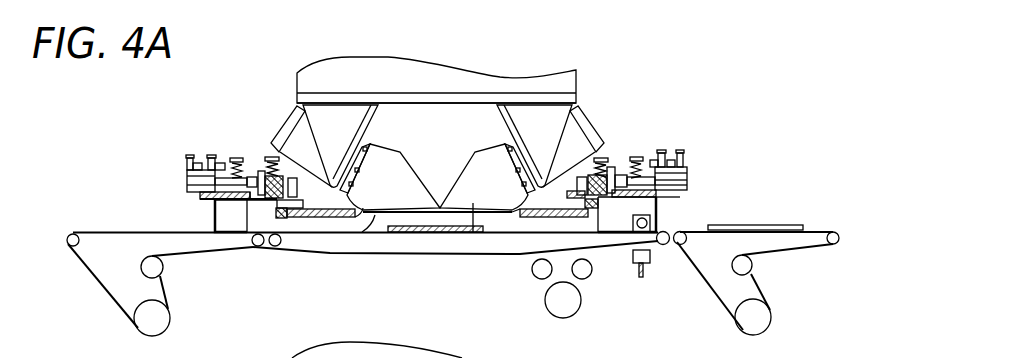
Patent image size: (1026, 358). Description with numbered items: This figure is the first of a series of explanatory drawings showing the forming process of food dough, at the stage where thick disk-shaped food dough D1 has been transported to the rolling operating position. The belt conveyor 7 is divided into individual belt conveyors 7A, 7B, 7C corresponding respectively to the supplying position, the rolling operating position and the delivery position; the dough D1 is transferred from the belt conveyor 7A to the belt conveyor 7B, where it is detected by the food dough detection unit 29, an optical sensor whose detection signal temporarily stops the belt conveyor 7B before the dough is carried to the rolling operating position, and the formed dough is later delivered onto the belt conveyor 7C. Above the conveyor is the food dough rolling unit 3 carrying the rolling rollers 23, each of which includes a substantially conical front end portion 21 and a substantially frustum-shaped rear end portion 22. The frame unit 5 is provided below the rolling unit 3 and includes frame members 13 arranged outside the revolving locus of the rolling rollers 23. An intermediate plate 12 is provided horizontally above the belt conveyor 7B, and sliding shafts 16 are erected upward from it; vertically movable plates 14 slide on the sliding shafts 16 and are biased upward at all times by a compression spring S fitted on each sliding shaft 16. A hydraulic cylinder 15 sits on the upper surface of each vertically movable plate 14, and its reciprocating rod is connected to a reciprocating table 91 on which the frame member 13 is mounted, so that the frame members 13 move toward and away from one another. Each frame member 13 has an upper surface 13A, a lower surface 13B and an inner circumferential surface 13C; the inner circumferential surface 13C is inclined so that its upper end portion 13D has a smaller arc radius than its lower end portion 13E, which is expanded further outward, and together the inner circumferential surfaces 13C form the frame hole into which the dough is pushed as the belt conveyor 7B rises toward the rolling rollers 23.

The food dough rolling unit 3 is at (536, 70).
The upper surface of the frame member 13A is at (540, 185).
The rolling roller 23 is at (410, 178).
The frame member 13 is at (282, 215).
The lower surface of the frame member 13B is at (545, 217).
The inner circumferential surface 13C is at (348, 220).
The upper end portion of the inner circumferential surface 13D is at (372, 228).
The lower end portion of the inner circumferential surface 13E is at (362, 214).
The thick disk-shaped food dough D1 is at (408, 233).
The front end portion 21 is at (473, 232).
The rear end portion 22 is at (512, 212).
The reciprocating table 91 is at (268, 212).
The hydraulic cylinder 15 is at (187, 178).
The sliding shaft 16 is at (237, 162).
The compression spring S is at (267, 170).
The frame unit 5 is at (675, 147).
The vertically movable plate 14 is at (213, 201).
The intermediate plate 12 is at (612, 231).
The belt conveyor 7 is at (767, 272).
The belt conveyor 7A is at (778, 256).
The belt conveyor 7B is at (602, 254).
The belt conveyor 7C is at (107, 293).
The food dough detection unit 29 is at (652, 258).